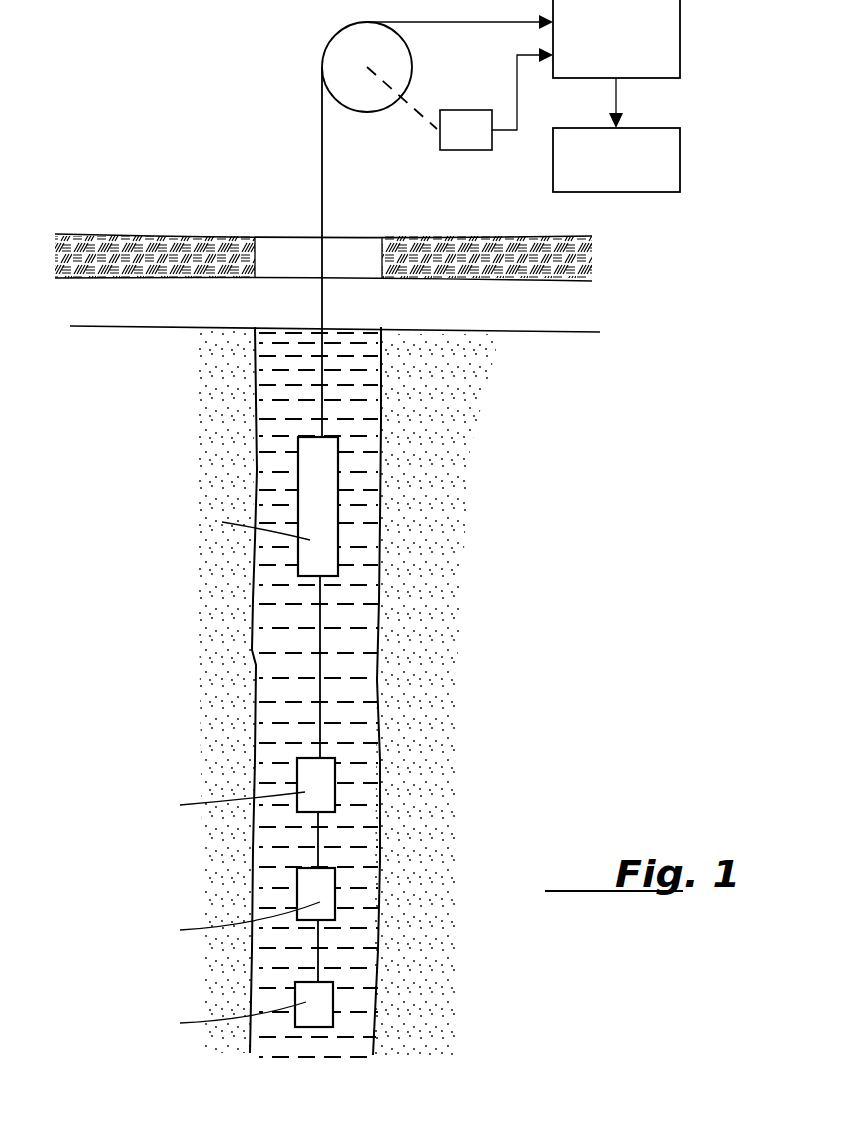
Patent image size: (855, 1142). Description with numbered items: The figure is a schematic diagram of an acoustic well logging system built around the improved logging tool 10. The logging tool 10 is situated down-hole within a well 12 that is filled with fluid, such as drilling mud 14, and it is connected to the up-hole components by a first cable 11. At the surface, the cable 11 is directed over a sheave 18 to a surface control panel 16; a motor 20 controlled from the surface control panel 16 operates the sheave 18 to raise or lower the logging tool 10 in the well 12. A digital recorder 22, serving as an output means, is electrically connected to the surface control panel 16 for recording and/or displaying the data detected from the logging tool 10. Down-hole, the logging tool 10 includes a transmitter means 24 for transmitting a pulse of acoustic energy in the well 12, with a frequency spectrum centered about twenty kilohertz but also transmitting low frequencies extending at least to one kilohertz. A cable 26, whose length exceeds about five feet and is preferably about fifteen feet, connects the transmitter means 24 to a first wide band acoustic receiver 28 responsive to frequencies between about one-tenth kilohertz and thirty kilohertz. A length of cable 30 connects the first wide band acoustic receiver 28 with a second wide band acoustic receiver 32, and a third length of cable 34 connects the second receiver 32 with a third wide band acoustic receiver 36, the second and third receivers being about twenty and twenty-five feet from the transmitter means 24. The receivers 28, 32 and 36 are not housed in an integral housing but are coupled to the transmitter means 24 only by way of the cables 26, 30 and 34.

The logging tool 10 is at (470, 679).
The first cable 11 is at (322, 216).
The well 12 is at (255, 568).
The drilling mud 14 is at (297, 405).
The surface control panel 16 is at (655, 62).
The sheave 18 is at (398, 67).
The motor 20 is at (480, 141).
The digital recorder 22 is at (668, 172).
The transmitter means 24 is at (325, 522).
The cable 26 is at (322, 643).
The first wide band acoustic receiver 28 is at (325, 792).
The cable 30 is at (318, 857).
The second wide band acoustic receiver 32 is at (322, 902).
The cable 34 is at (318, 958).
The third wide band acoustic receiver 36 is at (325, 1010).